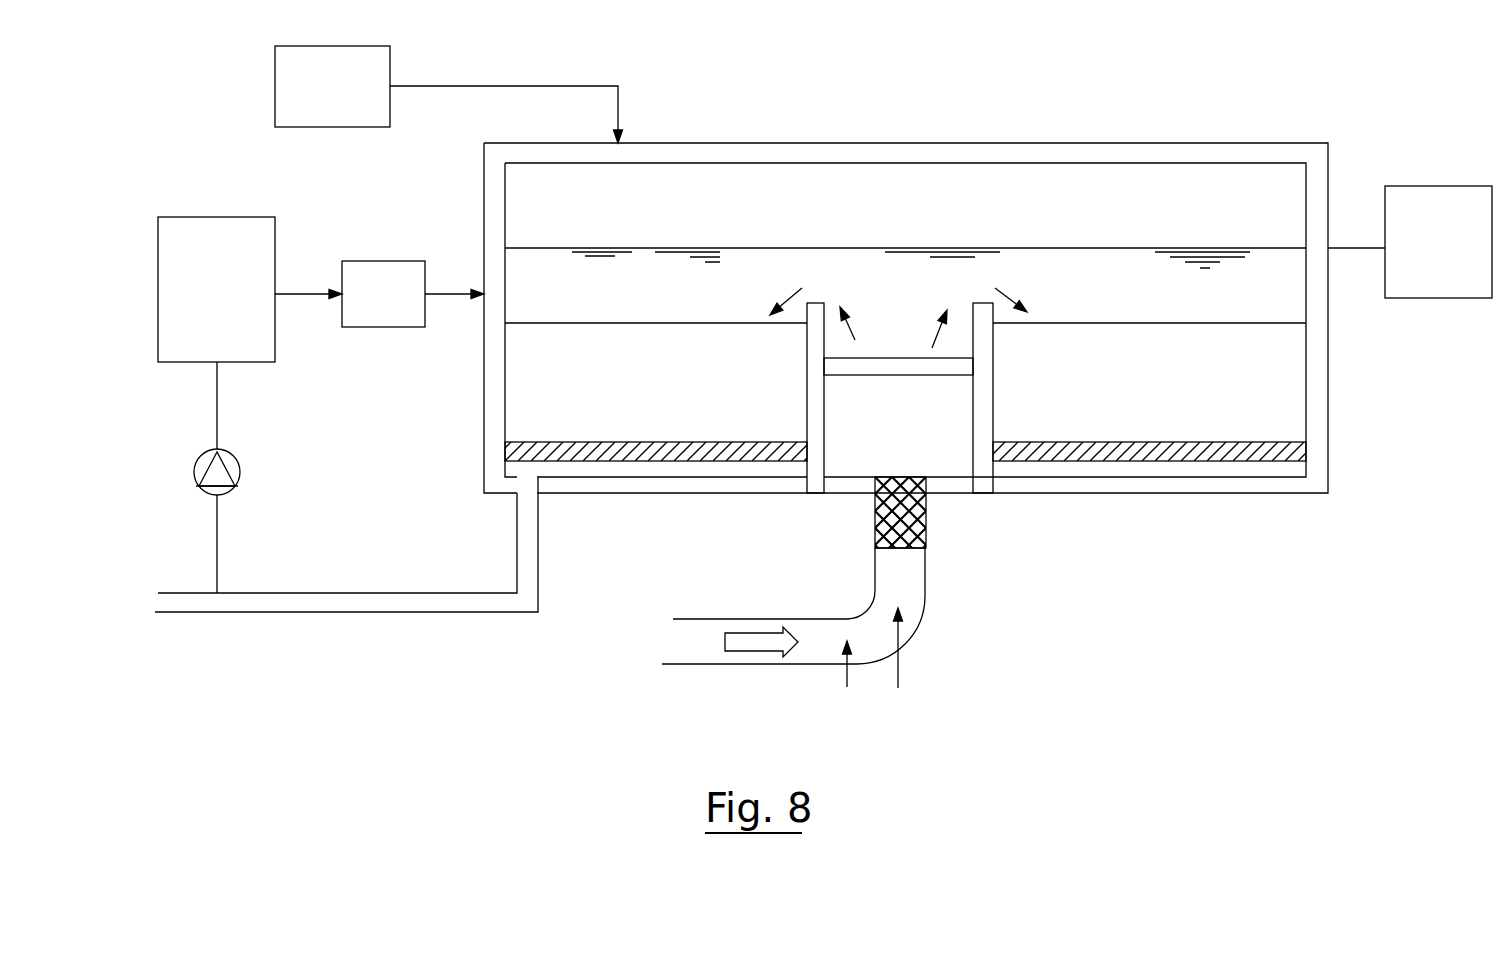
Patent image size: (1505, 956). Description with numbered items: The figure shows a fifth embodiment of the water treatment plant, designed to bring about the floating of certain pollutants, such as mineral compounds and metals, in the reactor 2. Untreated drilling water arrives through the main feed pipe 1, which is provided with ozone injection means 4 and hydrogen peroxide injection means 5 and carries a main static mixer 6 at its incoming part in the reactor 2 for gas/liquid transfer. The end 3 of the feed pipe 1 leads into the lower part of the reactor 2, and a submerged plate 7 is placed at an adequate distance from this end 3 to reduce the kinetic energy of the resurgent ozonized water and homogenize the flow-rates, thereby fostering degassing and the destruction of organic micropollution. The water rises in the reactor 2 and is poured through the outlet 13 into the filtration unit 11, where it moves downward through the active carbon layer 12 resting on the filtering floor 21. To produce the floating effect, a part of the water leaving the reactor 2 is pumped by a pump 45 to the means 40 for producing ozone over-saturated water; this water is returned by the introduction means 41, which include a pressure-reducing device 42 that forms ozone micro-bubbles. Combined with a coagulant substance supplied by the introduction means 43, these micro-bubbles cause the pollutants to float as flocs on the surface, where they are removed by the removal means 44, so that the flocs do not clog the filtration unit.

The main feed pipe 1 is at (687, 648).
The reactor 2 is at (852, 437).
The end of the feed pipe 3 is at (897, 472).
The ozone injection means 4 is at (902, 668).
The hydrogen peroxide injection means 5 is at (849, 685).
The main static mixer 6 is at (875, 534).
The submerged plate 7 is at (883, 365).
The filtration unit 11 is at (1167, 498).
The active carbon layer 12 is at (578, 366).
The outlet 13 is at (985, 298).
The filtering floor 21 is at (617, 445).
The means for the production of ozone over-saturated water 40 is at (212, 255).
The means for the introduction of the over-saturated water 41 is at (442, 243).
The pressure-reducing device 42 is at (377, 302).
The means for the introduction of coagulant substance 43 is at (358, 97).
The means for the removal of flocs 44 is at (1438, 275).
The pump 45 is at (240, 470).